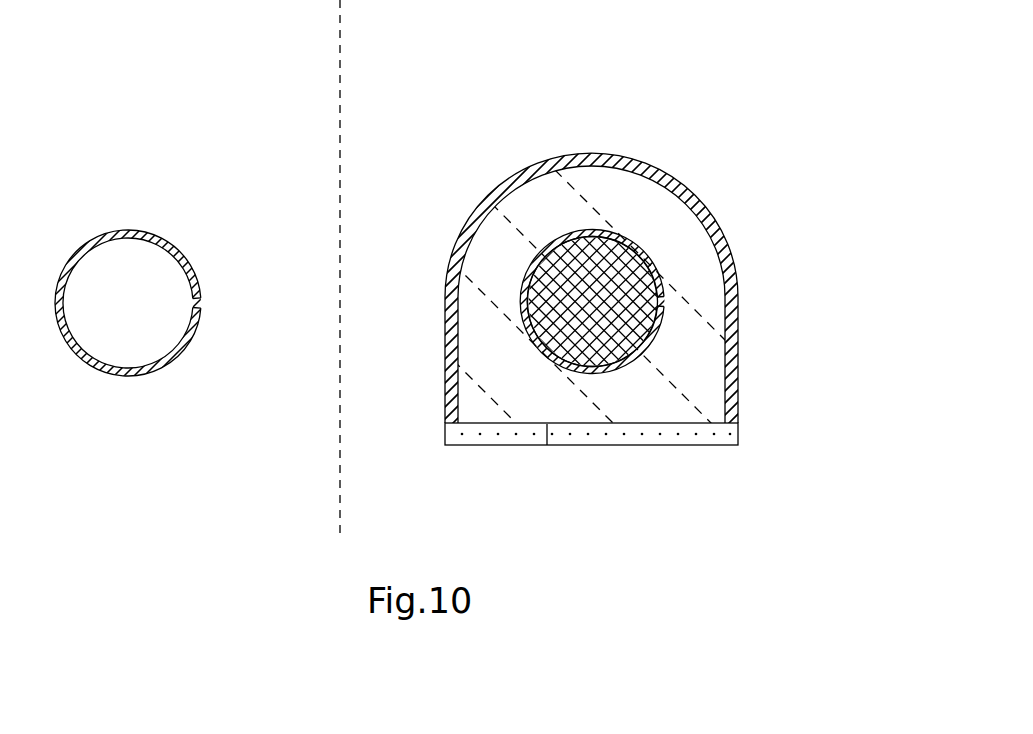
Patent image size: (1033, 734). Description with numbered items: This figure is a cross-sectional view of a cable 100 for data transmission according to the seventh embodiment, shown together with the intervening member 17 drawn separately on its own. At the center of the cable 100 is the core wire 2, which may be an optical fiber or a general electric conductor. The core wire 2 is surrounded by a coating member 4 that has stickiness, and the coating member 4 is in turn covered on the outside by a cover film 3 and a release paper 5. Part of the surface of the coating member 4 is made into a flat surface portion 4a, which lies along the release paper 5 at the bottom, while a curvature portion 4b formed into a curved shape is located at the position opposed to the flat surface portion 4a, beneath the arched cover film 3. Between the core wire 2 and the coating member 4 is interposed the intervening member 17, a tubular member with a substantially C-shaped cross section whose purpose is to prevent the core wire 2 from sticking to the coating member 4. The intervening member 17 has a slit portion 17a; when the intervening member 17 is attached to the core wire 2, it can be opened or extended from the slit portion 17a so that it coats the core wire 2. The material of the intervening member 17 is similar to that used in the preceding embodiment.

The cable 100 is at (653, 117).
The core wire 2 is at (555, 268).
The cover film 3 is at (731, 253).
The coating member 4 is at (712, 343).
The flat surface portion 4a is at (547, 445).
The curvature portion 4b is at (588, 162).
The release paper 5 is at (733, 432).
The intervening member 17 is at (522, 298).
The slit portion 17a is at (201, 302).